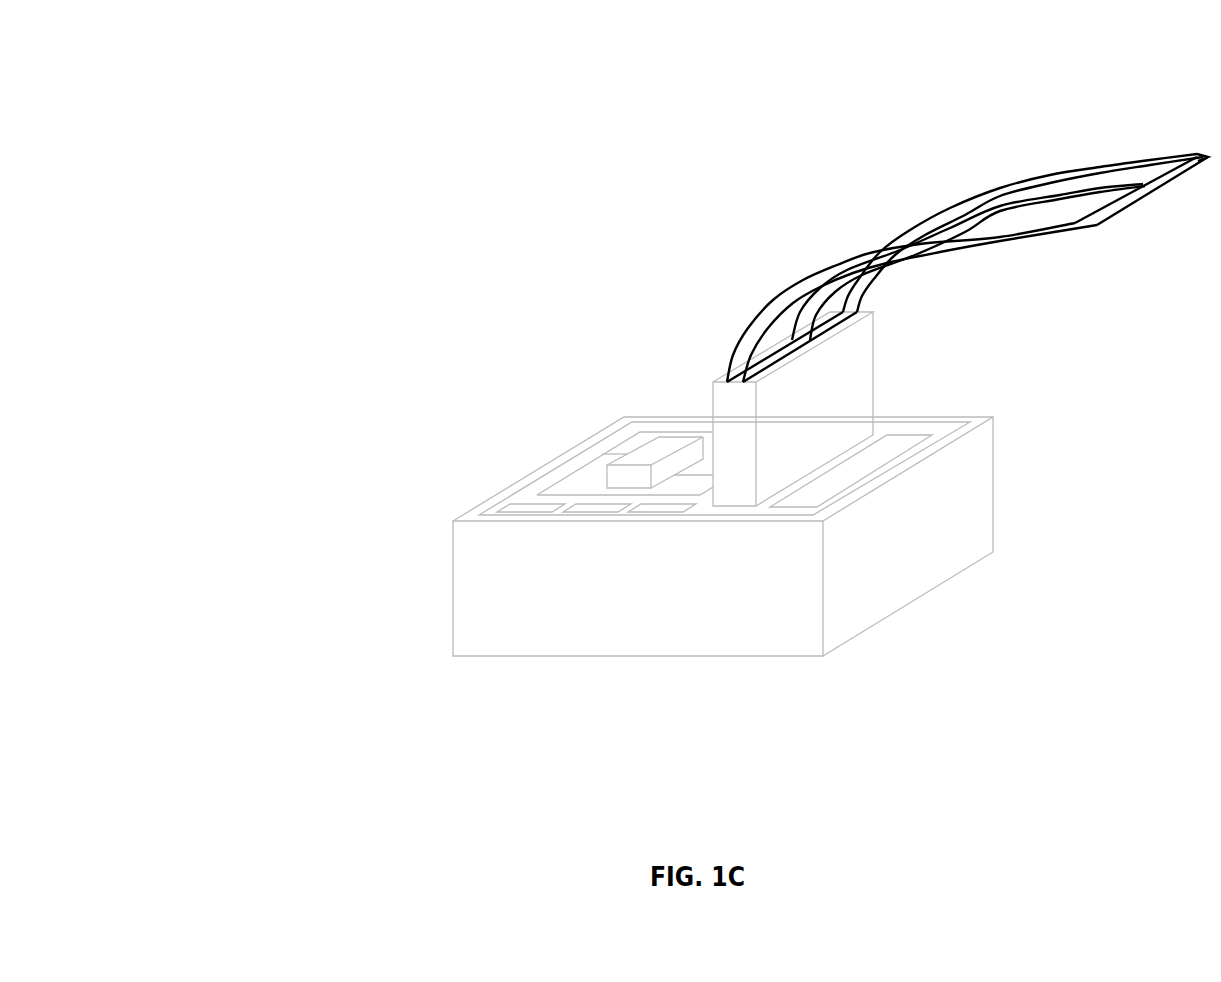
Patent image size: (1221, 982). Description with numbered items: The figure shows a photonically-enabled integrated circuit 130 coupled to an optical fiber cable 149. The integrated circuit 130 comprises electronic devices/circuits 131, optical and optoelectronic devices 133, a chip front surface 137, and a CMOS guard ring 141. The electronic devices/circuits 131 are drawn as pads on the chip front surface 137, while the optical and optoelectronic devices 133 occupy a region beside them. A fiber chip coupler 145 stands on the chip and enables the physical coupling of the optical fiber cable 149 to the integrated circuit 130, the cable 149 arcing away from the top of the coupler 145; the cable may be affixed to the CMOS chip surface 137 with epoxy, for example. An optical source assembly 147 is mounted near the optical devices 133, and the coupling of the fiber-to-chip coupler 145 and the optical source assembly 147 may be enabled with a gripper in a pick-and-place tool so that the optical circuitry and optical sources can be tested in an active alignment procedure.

The photonically-enabled integrated circuit 130 is at (302, 95).
The electronic devices/circuits 131 is at (647, 512).
The optical and optoelectronic devices 133 is at (598, 492).
The chip front surface 137 is at (583, 467).
The CMOS guard ring 141 is at (982, 418).
The fiber chip coupler 145 is at (832, 418).
The optical source assembly 147 is at (665, 443).
The optical fiber cable 149 is at (1023, 182).